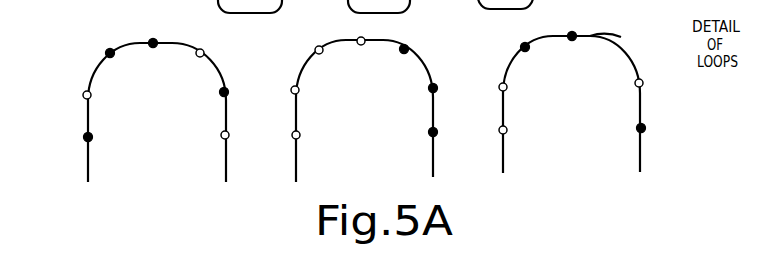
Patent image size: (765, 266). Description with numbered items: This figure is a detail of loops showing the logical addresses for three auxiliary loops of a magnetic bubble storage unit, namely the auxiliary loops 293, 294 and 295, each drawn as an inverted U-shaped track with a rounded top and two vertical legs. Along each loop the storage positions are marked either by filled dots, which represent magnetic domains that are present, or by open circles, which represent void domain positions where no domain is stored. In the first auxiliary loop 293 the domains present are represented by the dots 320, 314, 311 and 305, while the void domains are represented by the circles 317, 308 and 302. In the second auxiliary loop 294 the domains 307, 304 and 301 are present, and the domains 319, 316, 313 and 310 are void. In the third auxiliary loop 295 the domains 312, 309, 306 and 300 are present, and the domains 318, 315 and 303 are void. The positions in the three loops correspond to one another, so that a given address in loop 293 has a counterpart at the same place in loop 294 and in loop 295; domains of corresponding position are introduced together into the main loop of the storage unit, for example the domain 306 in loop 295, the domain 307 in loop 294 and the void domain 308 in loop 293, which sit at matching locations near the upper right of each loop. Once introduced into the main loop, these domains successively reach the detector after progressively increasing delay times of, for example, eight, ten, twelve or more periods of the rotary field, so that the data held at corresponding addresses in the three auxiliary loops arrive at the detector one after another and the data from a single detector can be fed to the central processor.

The auxiliary loop 293 is at (166, 182).
The auxiliary loop 294 is at (373, 177).
The auxiliary loop 295 is at (578, 173).
The domain 300 is at (645, 130).
The domain 301 is at (437, 132).
The void domain 302 is at (229, 135).
The void domain 303 is at (643, 83).
The domain 304 is at (437, 88).
The domain 305 is at (228, 91).
The domain 306 is at (621, 35).
The domain 307 is at (408, 49).
The void domain 308 is at (204, 53).
The domain 309 is at (571, 41).
The void domain 310 is at (361, 45).
The domain 311 is at (154, 47).
The domain 312 is at (521, 47).
The void domain 313 is at (315, 50).
The domain 314 is at (107, 53).
The void domain 315 is at (500, 89).
The void domain 316 is at (291, 91).
The void domain 317 is at (84, 96).
The void domain 318 is at (500, 133).
The void domain 319 is at (293, 138).
The domain 320 is at (85, 139).